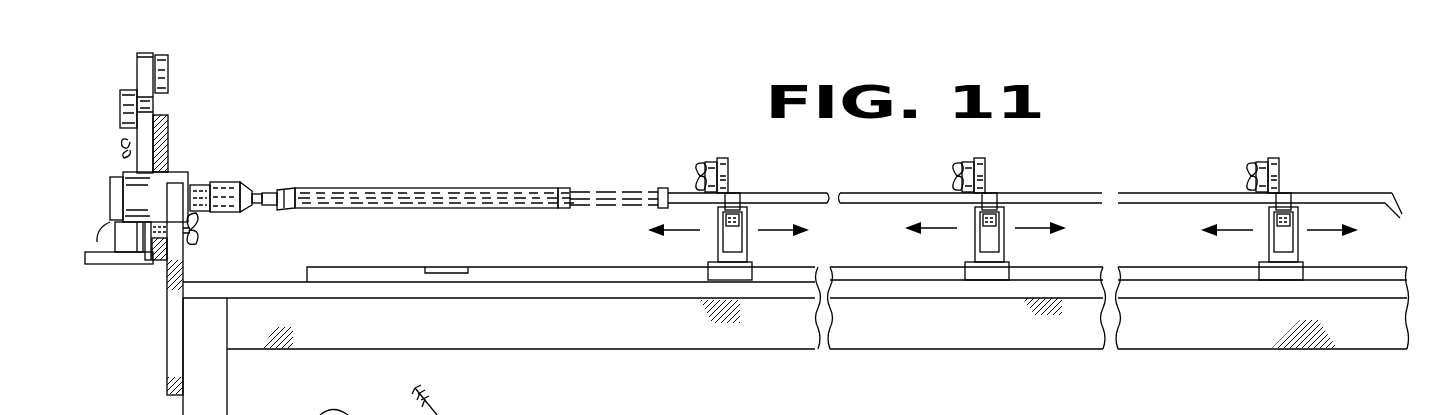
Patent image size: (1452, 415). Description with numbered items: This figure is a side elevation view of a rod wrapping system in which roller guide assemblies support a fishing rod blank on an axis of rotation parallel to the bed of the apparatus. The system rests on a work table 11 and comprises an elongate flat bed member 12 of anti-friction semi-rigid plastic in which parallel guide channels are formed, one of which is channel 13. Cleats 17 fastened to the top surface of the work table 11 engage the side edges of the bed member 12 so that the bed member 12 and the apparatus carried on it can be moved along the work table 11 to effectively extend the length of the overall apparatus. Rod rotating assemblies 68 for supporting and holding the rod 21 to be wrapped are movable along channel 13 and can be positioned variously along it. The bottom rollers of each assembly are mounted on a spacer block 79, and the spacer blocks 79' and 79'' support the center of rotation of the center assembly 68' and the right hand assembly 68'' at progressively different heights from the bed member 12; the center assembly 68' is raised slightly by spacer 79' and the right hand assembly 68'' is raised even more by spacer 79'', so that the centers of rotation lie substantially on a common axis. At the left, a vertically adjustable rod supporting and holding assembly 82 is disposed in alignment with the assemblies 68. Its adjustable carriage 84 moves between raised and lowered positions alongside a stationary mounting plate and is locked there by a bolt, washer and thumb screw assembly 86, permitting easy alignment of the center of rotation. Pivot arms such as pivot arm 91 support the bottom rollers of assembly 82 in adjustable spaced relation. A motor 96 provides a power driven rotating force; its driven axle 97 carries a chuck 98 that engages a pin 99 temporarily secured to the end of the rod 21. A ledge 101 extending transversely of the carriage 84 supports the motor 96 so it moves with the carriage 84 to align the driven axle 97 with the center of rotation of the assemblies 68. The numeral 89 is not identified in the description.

The work table 11 is at (288, 282).
The bed member 12 is at (675, 165).
The guide channel 13 is at (122, 55).
The cleats 17 is at (457, 267).
The rod 21 is at (586, 198).
The rod rotating assembly 68 is at (755, 167).
The center rod rotating assembly 68' is at (1005, 167).
The right hand rod rotating assembly 68'' is at (1307, 159).
The spacer block 79 is at (741, 236).
The spacer block 79' is at (1006, 236).
The spacer block 79'' is at (1290, 236).
The rod supporting and holding assembly 82 is at (126, 291).
The carriage 84 is at (160, 212).
The bolt, washer and thumb screw assembly 86 is at (204, 233).
The guide 89 is at (1062, 410).
The pivot arm 91 is at (142, 130).
The motor 96 is at (138, 193).
The driven axle 97 is at (200, 185).
The chuck 98 is at (250, 182).
The pin 99 is at (258, 188).
The ledge 101 is at (132, 240).